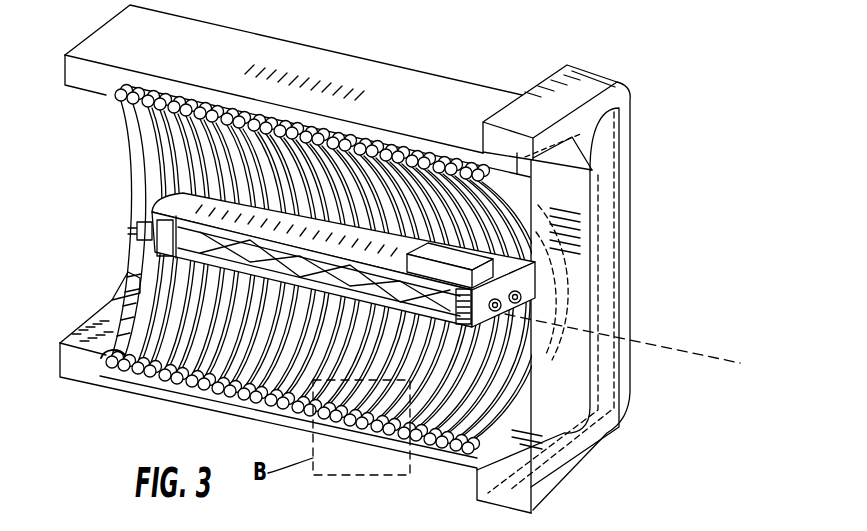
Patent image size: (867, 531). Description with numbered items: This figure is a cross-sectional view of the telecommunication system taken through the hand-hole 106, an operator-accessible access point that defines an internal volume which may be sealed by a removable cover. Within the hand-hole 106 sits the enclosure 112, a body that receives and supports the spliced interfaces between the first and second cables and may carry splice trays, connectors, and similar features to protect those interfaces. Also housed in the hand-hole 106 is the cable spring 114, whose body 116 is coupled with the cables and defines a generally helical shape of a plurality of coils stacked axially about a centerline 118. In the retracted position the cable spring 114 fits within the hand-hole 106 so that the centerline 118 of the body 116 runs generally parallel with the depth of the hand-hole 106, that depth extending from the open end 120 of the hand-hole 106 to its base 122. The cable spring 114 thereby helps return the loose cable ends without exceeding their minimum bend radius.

The hand-hole 106 is at (625, 108).
The enclosure 112 is at (498, 313).
The cable spring 114 is at (186, 140).
The body 116 is at (378, 146).
The centerline 118 is at (677, 352).
The open end 120 is at (605, 213).
The base 122 is at (116, 345).